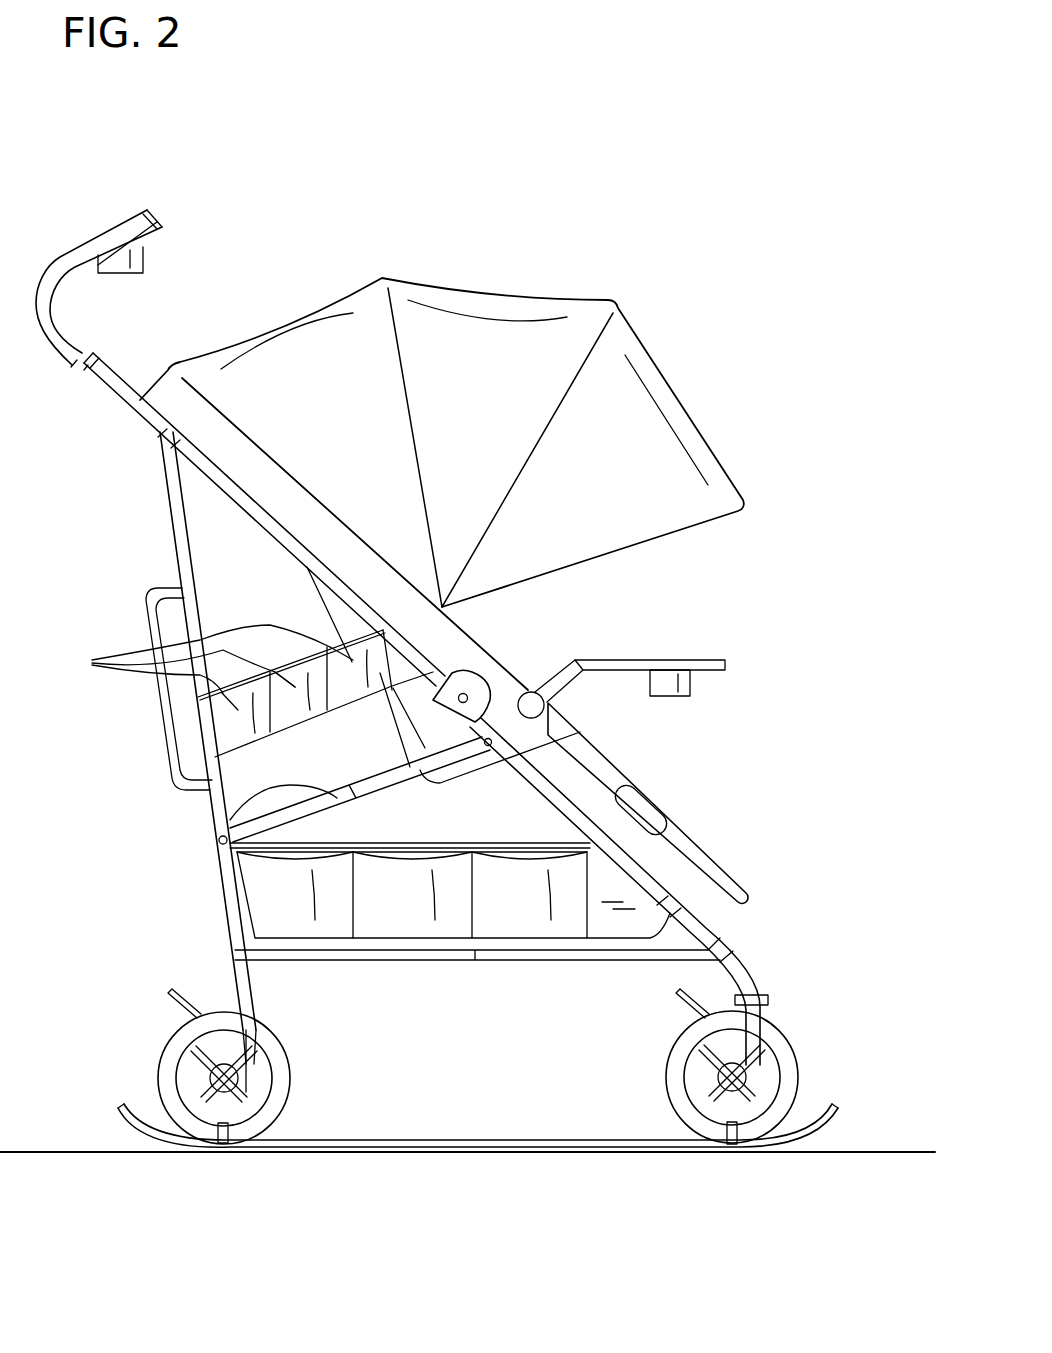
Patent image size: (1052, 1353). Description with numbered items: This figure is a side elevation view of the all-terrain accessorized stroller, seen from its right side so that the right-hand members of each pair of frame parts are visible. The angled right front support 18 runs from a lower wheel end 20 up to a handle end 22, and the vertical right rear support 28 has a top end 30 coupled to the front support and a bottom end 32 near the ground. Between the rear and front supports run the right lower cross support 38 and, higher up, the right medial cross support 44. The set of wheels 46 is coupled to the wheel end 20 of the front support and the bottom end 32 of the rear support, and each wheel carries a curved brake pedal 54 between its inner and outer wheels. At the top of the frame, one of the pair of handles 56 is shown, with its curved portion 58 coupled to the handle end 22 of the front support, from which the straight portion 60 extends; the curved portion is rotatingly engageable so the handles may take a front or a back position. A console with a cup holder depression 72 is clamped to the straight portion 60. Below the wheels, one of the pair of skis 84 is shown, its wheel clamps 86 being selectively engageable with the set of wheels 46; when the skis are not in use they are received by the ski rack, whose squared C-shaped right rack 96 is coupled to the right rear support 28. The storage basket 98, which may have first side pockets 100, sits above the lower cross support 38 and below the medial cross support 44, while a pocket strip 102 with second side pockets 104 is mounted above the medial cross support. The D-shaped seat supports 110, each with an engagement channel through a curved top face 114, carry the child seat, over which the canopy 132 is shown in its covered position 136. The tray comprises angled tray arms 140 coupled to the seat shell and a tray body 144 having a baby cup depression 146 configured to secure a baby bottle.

The right front support 18 is at (560, 803).
The wheel end 20 is at (753, 1043).
The handle end 22 is at (87, 385).
The right rear support 28 is at (217, 800).
The top end 30 is at (163, 455).
The bottom end 32 is at (197, 1060).
The right lower cross support 38 is at (450, 955).
The right medial cross support 44 is at (219, 843).
The set of wheels 46 is at (282, 1082).
The curved brake pedal 54 is at (170, 993).
The handles 56 is at (158, 212).
The curved portion 58 is at (27, 305).
The straight portion 60 is at (143, 198).
The cup holder depression 72 is at (133, 270).
The skis 84 is at (485, 1153).
The wheel clamps 86 is at (232, 1135).
The right rack 96 is at (156, 715).
The storage basket 98 is at (628, 921).
The first side pockets 100 is at (503, 905).
The pocket strips 102 is at (415, 655).
The second side pockets 104 is at (92, 663).
The seat supports 110 is at (475, 710).
The curved top face 114 is at (503, 663).
The canopy 132 is at (509, 350).
The covered position 136 is at (645, 452).
The tray arms 140 is at (563, 687).
The tray body 144 is at (683, 663).
The baby cup depression 146 is at (683, 692).